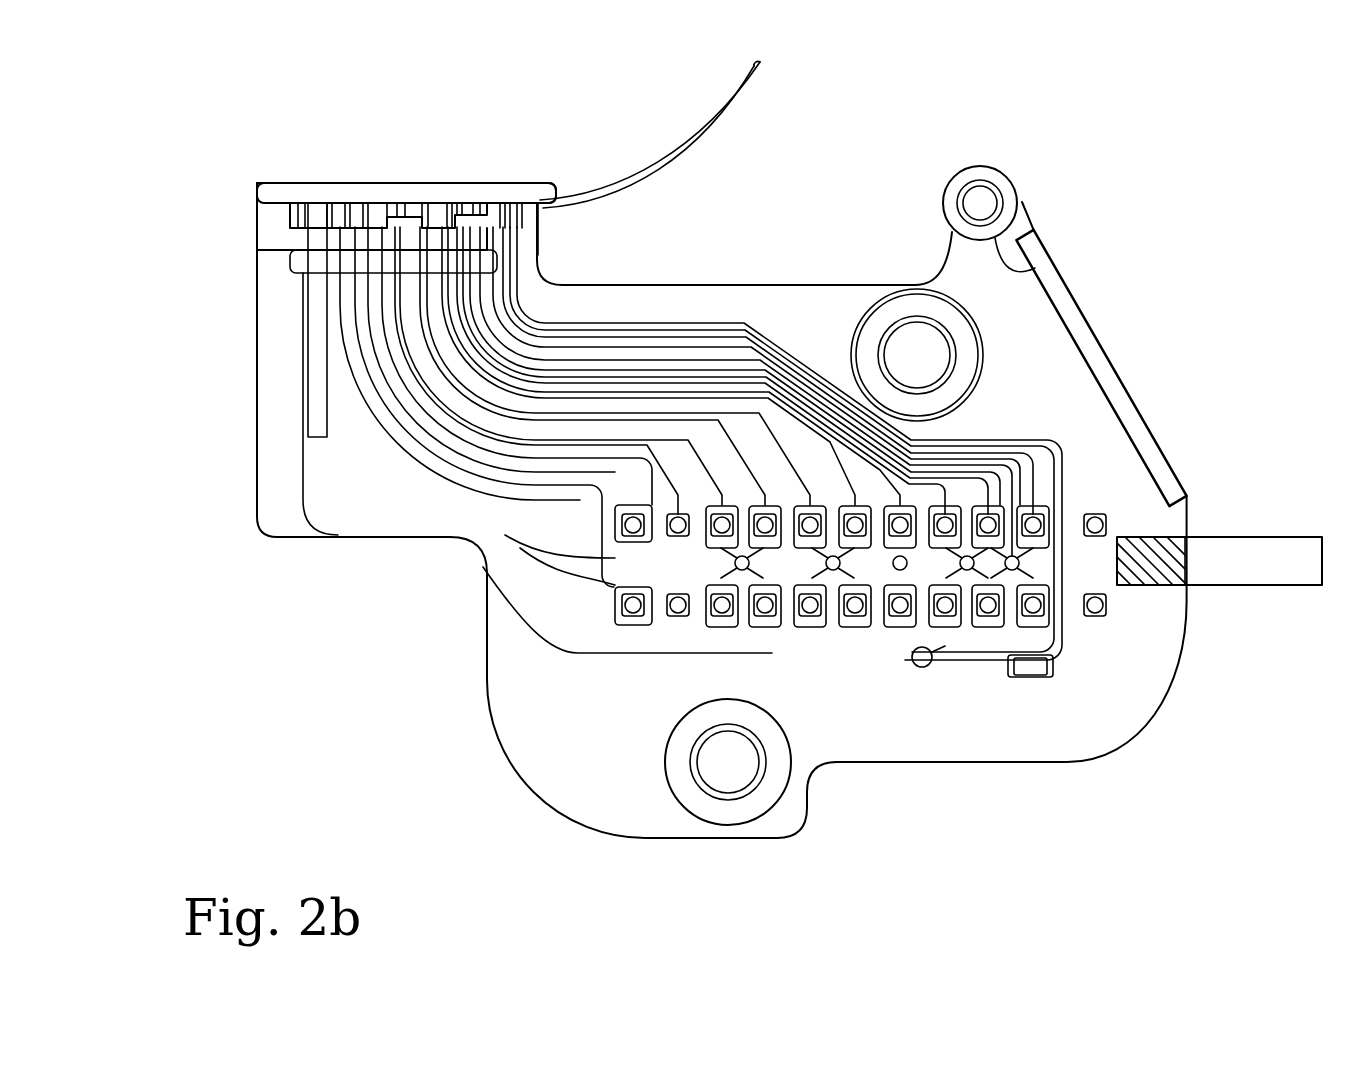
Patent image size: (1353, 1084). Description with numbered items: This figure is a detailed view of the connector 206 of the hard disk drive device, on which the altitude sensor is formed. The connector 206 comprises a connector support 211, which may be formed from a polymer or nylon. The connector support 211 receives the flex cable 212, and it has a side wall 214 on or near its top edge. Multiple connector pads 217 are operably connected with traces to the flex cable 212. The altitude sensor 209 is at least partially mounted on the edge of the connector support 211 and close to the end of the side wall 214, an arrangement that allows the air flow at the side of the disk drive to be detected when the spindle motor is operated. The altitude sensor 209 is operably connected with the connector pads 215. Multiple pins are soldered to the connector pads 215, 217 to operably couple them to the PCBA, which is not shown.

The connector 206 is at (385, 608).
The altitude sensor 209 is at (1260, 560).
The connector support 211 is at (303, 390).
The flex cable 212 is at (651, 168).
The side wall 214 is at (1062, 293).
The connector pads 215 is at (1097, 528).
The connector pads 217 is at (770, 540).